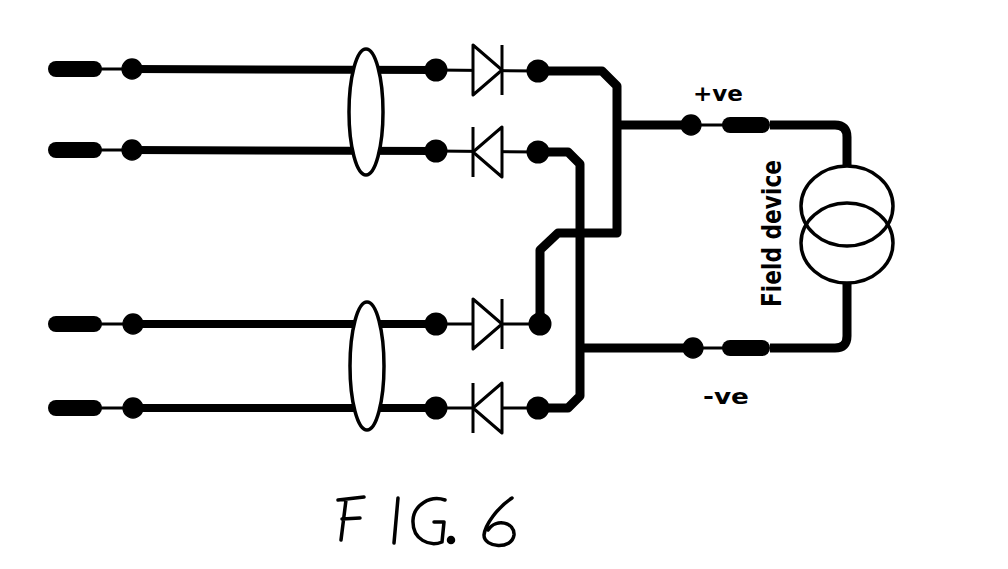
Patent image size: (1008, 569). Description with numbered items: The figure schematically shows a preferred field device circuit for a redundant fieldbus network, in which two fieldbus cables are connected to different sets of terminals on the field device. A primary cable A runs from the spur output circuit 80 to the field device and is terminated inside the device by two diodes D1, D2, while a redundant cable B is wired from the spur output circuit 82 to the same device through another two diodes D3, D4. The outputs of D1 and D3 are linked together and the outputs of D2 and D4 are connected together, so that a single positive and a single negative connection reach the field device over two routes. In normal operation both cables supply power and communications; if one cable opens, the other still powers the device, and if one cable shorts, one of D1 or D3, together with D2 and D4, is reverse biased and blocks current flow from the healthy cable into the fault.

The spur output circuit 80 is at (237, 113).
The spur output circuit 82 is at (238, 370).
The diode D1 is at (487, 55).
The diode D2 is at (487, 168).
The diode D3 is at (488, 309).
The diode D4 is at (487, 426).